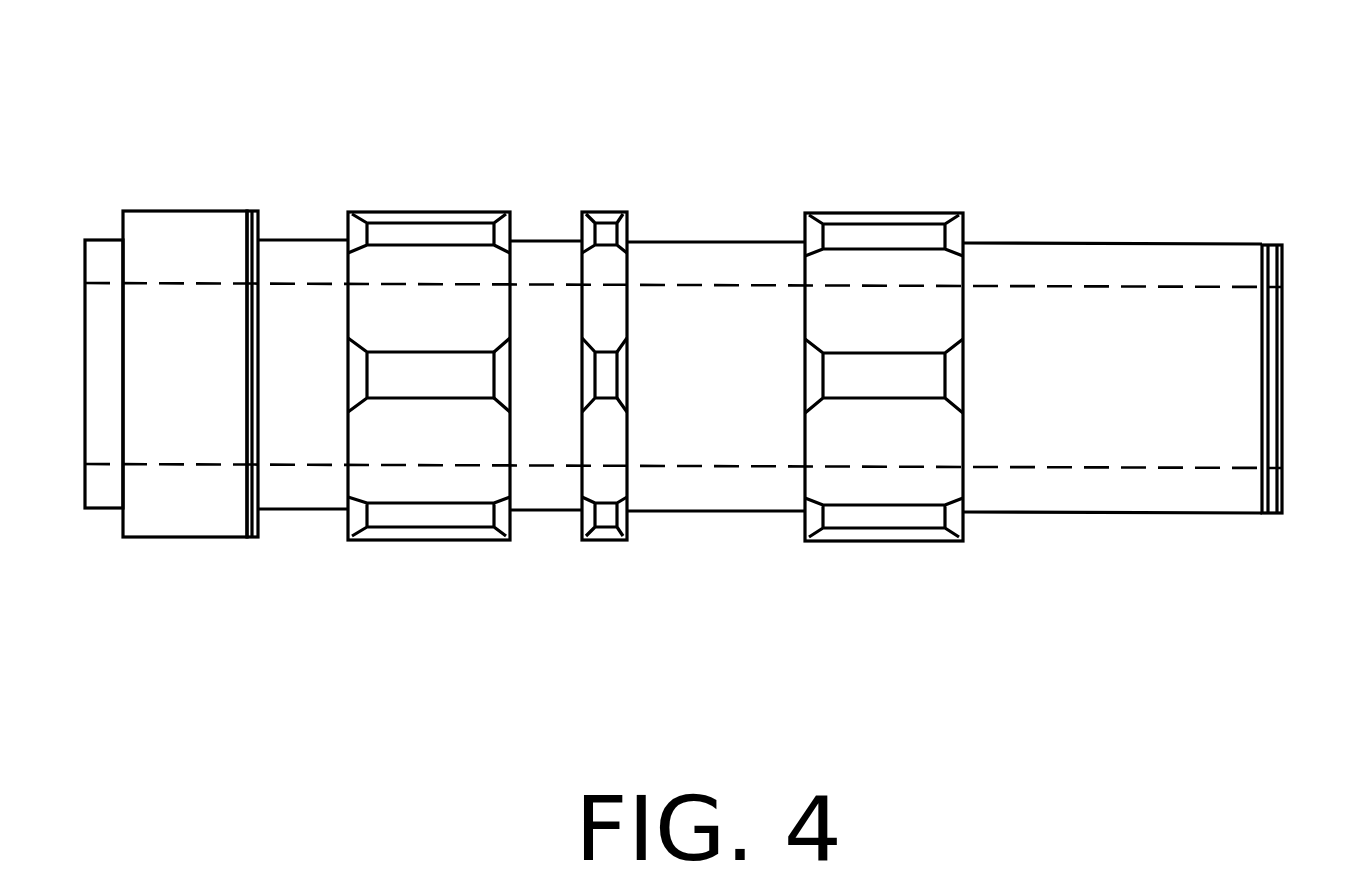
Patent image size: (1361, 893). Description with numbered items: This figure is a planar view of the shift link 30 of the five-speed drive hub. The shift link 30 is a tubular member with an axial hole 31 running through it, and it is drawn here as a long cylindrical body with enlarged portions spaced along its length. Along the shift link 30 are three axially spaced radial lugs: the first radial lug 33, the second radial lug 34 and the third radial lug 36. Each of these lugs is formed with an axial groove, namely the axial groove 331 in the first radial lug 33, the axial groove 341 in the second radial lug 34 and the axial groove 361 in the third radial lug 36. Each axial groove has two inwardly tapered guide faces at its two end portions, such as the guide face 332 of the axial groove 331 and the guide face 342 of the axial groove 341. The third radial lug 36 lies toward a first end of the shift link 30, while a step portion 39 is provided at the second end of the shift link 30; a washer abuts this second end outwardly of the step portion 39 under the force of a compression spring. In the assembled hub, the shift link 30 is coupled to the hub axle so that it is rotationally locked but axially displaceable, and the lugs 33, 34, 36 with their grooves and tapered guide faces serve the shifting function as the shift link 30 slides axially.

The shift link 30 is at (1193, 243).
The axial hole 31 is at (1218, 290).
The first radial lug 33 is at (676, 270).
The axial groove 331 is at (600, 367).
The guide face 332 is at (627, 357).
The second radial lug 34 is at (444, 282).
The axial groove 341 is at (398, 375).
The guide face 342 is at (512, 352).
The third radial lug 36 is at (959, 309).
The axial groove 361 is at (913, 373).
The step portion 39 is at (103, 243).